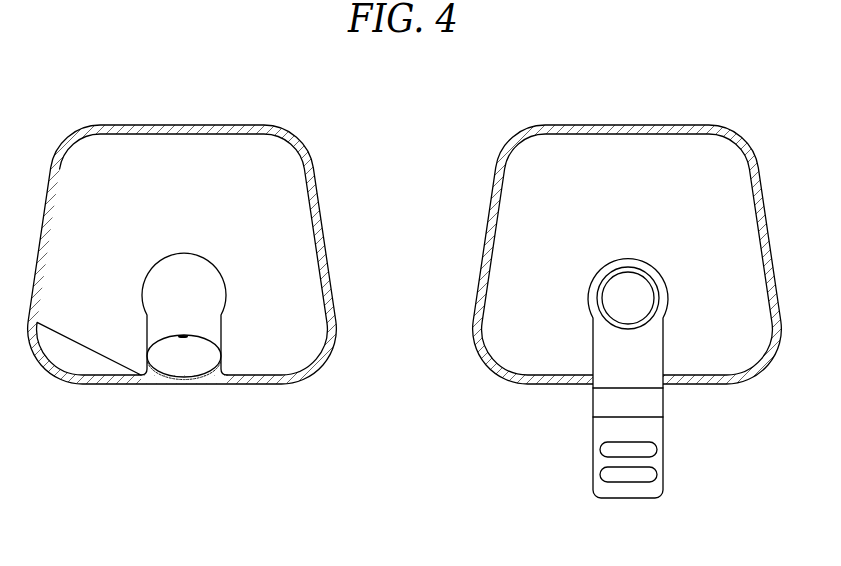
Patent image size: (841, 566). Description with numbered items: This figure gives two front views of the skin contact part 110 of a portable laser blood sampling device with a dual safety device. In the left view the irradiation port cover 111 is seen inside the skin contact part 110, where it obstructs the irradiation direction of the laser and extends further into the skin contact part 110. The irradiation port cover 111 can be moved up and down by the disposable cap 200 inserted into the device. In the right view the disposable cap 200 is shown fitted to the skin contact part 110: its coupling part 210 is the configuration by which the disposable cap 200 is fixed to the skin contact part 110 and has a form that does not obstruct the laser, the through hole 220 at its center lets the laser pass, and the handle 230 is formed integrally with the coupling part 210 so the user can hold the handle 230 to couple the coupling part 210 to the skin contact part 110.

The skin contact part 110 is at (193, 160).
The irradiation port cover 111 is at (208, 302).
The disposable cap 200 is at (641, 341).
The coupling part 210 is at (635, 265).
The through hole 220 is at (618, 295).
The handle 230 is at (647, 370).